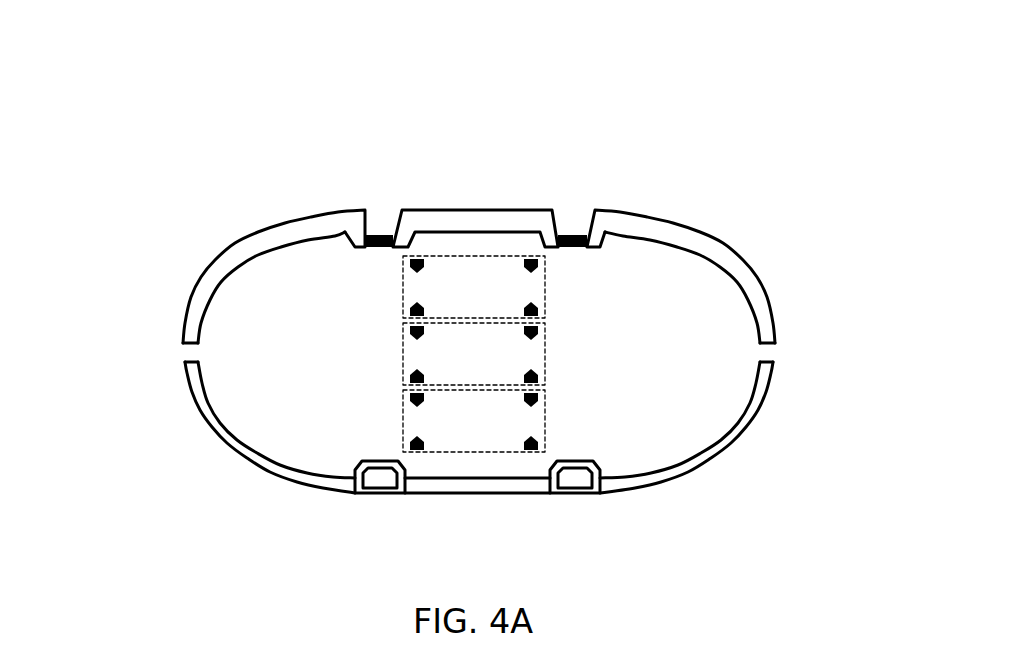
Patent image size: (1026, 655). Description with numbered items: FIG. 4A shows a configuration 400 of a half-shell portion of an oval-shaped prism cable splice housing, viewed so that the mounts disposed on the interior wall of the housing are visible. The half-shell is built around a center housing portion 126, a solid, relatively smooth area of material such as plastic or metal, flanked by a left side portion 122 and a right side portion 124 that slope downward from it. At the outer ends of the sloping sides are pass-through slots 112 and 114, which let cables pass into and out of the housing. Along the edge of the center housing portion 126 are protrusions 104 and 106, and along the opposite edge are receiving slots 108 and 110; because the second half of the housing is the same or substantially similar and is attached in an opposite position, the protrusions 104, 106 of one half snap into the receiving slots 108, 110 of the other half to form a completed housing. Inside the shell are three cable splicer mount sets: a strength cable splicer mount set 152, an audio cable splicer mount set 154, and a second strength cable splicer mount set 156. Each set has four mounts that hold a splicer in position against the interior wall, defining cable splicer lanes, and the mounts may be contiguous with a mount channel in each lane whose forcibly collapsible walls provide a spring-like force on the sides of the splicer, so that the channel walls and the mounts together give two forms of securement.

The configuration 400 is at (95, 90).
The left side portion 122 is at (300, 220).
The right side portion 124 is at (647, 227).
The center housing portion 126 is at (487, 209).
The protrusion 104 is at (381, 233).
The protrusion 106 is at (573, 234).
The receiving slot 108 is at (370, 488).
The receiving slot 110 is at (563, 488).
The pass-through slot 112 is at (183, 357).
The pass-through slot 114 is at (776, 357).
The strength cable splicer mount set 152 is at (532, 300).
The audio cable splicer mount set 154 is at (415, 356).
The strength cable splicer mount set 156 is at (532, 425).